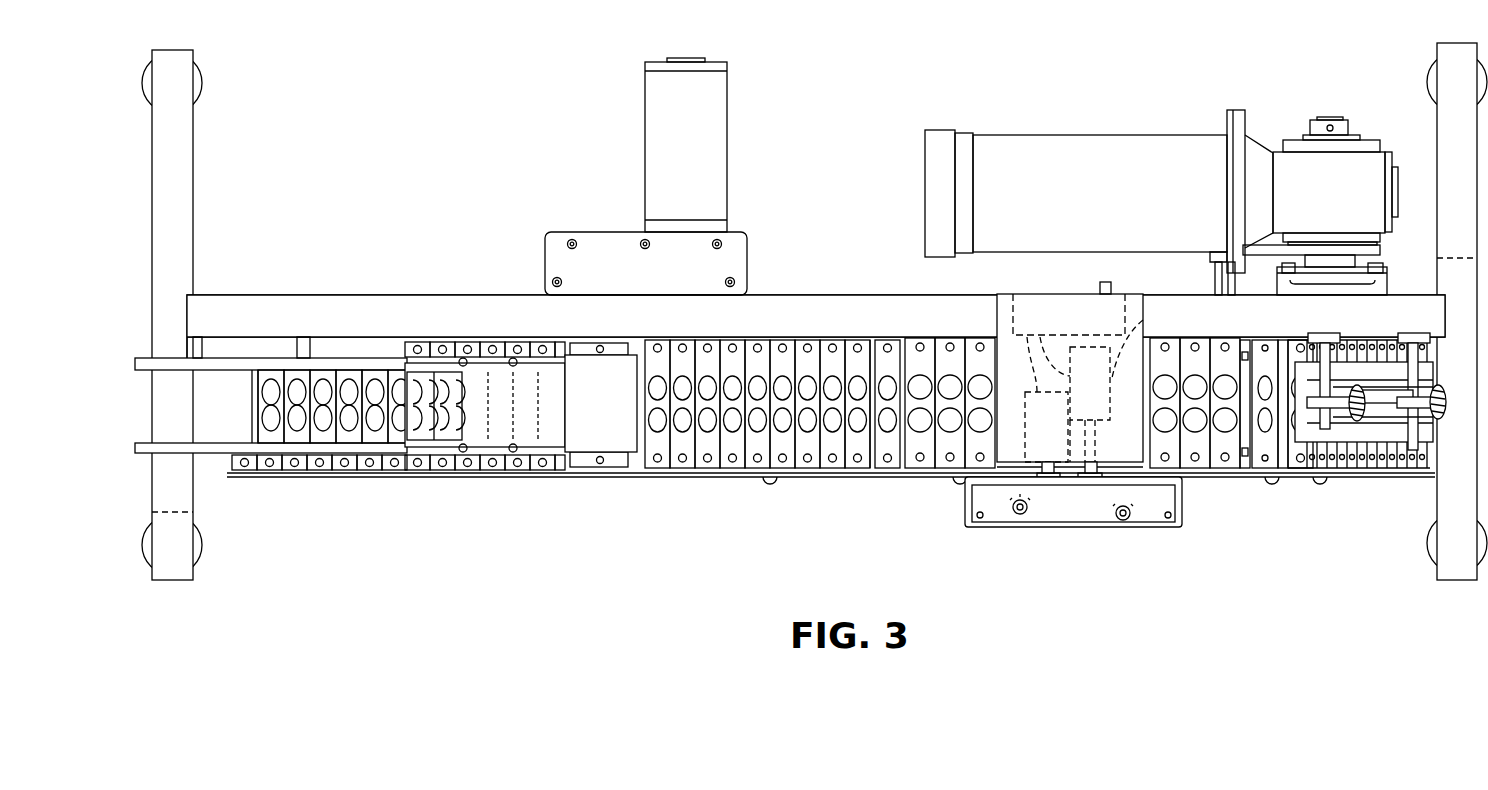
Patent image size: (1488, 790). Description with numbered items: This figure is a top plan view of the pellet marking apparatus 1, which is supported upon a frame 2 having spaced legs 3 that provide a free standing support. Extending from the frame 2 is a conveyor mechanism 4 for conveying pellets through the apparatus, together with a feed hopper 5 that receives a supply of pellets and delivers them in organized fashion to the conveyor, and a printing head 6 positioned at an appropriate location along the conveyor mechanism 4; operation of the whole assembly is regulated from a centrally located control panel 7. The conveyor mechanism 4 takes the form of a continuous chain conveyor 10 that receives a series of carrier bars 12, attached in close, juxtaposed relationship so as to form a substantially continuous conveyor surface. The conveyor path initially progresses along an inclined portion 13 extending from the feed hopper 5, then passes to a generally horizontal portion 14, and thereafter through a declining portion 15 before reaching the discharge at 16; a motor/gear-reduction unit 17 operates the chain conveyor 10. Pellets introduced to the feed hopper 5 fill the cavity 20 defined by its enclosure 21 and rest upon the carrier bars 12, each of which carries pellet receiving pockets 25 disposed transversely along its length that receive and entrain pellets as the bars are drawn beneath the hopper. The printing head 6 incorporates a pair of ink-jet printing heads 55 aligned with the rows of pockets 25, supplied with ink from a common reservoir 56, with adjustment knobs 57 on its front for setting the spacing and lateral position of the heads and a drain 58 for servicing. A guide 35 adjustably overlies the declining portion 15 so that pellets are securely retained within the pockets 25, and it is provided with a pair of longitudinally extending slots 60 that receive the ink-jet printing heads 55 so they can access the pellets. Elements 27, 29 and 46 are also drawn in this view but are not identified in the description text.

The pellet marking apparatus 1 is at (471, 141).
The frame 2 is at (398, 300).
The legs 3 is at (181, 149).
The conveyor mechanism 4 is at (853, 302).
The feed hopper 5 is at (363, 453).
The printing head 6 is at (1013, 293).
The control panel 7 is at (1080, 531).
The chain conveyor 10 is at (825, 479).
The carrier bars 12 is at (445, 466).
The inclined portion 13 is at (415, 486).
The horizontal portion 14 is at (898, 481).
The declining portion 15 is at (1305, 483).
The discharge 16 is at (1432, 461).
The motor/gear-reduction unit 17 is at (1123, 143).
The cavity 20 is at (340, 376).
The enclosure 21 is at (307, 453).
The pellet receiving pockets 25 is at (375, 384).
The spacer block 27 is at (580, 436).
The guide rail 29 is at (228, 402).
The guide 35 is at (1370, 375).
The adjusting knob 46 is at (1440, 453).
The ink-jet printing heads 55 is at (1143, 322).
The common reservoir 56 is at (1058, 307).
The adjustment knobs 57 is at (1050, 481).
The drain 58 is at (1112, 283).
The slots 60 is at (1367, 379).